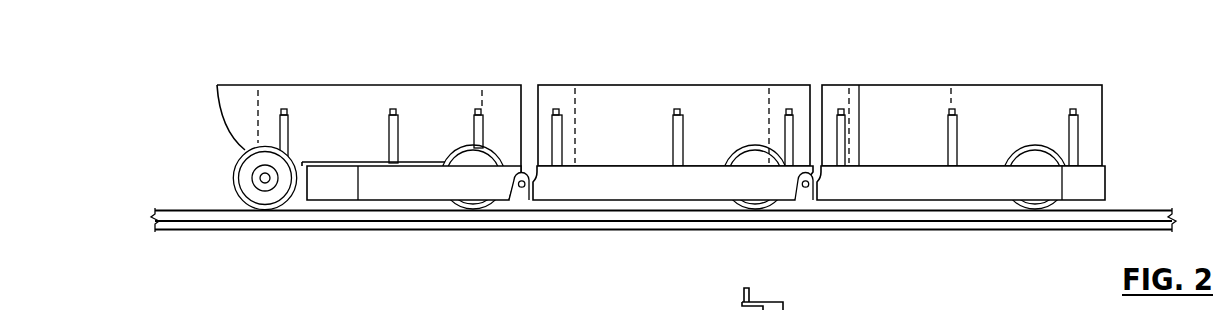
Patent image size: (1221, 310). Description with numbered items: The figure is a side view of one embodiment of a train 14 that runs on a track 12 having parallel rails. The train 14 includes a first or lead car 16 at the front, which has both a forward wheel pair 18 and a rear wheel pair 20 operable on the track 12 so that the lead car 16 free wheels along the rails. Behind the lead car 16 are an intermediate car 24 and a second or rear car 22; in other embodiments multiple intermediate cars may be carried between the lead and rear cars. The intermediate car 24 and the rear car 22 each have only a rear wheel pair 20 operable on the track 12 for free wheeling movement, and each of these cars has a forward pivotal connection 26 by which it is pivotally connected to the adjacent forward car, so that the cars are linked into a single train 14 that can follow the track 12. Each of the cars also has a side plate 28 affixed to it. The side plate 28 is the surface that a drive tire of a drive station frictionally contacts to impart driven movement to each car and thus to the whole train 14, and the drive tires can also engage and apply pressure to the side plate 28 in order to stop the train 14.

The track 12 is at (1123, 210).
The train 14 is at (745, 85).
The lead car 16 is at (338, 138).
The forward wheel pair 18 is at (247, 165).
The rear wheel pair 20 is at (458, 153).
The rear car 22 is at (930, 85).
The intermediate car 24 is at (620, 85).
The forward pivotal connection 26 is at (520, 190).
The side plate 28 is at (332, 193).